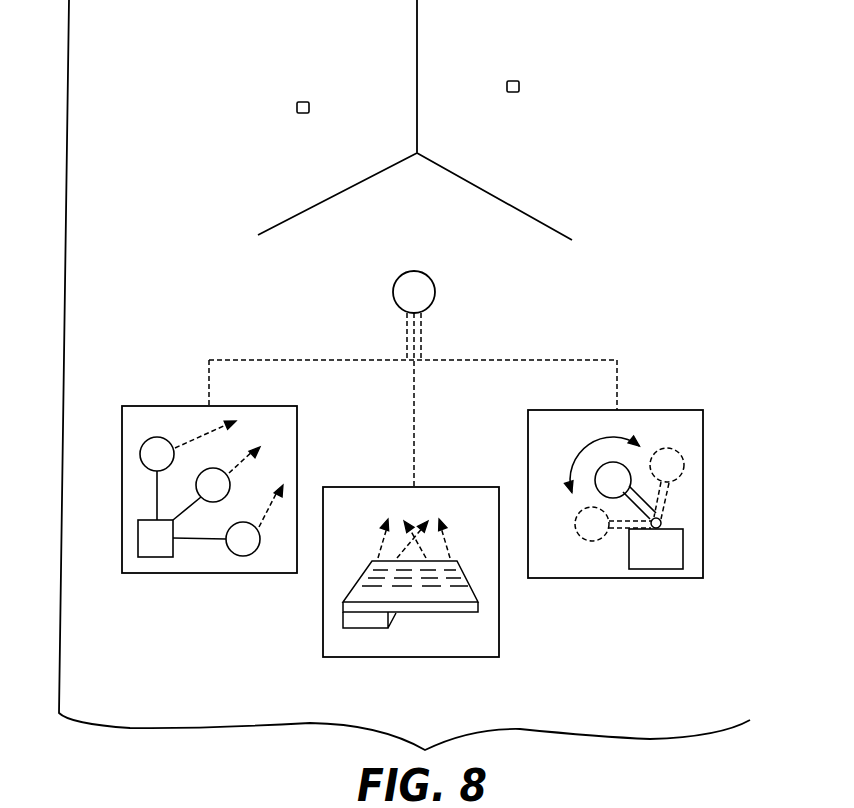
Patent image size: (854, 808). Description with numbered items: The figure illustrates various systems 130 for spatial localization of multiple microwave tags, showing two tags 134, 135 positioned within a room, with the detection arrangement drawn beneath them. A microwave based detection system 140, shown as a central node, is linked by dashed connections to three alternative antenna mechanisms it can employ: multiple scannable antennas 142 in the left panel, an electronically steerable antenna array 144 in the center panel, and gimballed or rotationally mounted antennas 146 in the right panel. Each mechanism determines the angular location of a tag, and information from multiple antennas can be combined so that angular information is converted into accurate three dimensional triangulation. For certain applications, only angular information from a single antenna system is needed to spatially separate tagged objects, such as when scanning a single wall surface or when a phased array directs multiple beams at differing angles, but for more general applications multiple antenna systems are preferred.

The system for spatial localization 130 is at (578, 113).
The tag 134 is at (513, 81).
The tag 135 is at (303, 102).
The microwave based detection system 140 is at (418, 271).
The scannable antennas 142 is at (198, 573).
The electronically steerable antenna array 144 is at (408, 657).
The gimballed or rotationally mounted antennas 146 is at (608, 578).